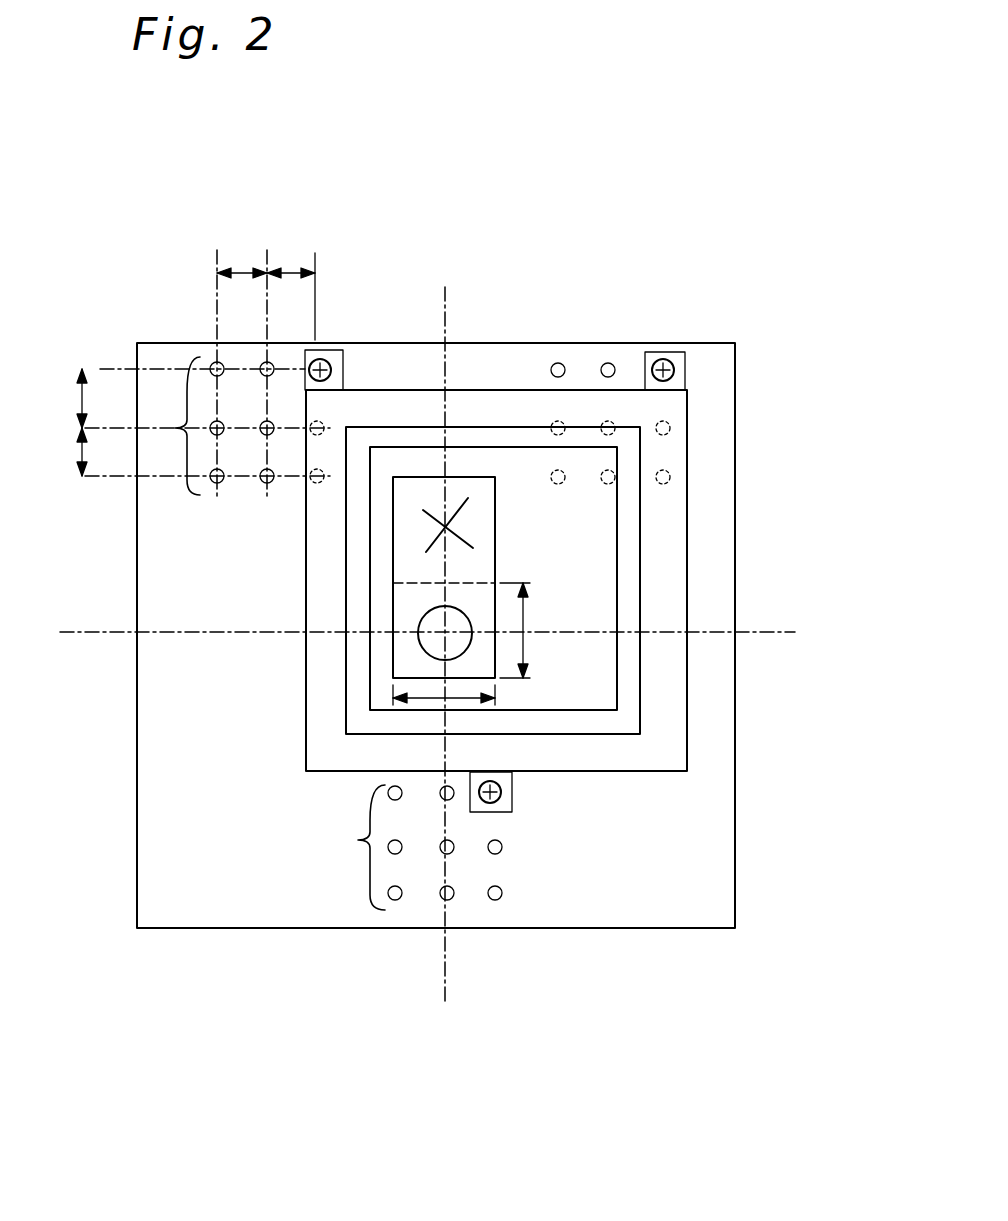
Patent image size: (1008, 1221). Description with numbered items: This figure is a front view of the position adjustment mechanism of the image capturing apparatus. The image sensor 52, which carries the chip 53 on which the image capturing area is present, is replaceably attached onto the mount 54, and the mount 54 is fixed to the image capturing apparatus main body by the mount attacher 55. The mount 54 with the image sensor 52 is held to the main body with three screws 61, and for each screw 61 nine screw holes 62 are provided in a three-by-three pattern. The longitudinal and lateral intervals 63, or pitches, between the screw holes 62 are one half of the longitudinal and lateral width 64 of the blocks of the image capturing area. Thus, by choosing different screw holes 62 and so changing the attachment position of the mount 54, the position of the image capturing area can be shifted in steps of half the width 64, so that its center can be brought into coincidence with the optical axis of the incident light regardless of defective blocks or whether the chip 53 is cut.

The image sensor 52 is at (633, 568).
The chip 53 is at (407, 650).
The mount 54 is at (677, 472).
The mount attacher 55 is at (723, 572).
The screw 61 is at (320, 363).
The screw hole 62 is at (607, 358).
The interval 63 is at (288, 265).
The longitudinal and lateral width 64 is at (527, 603).